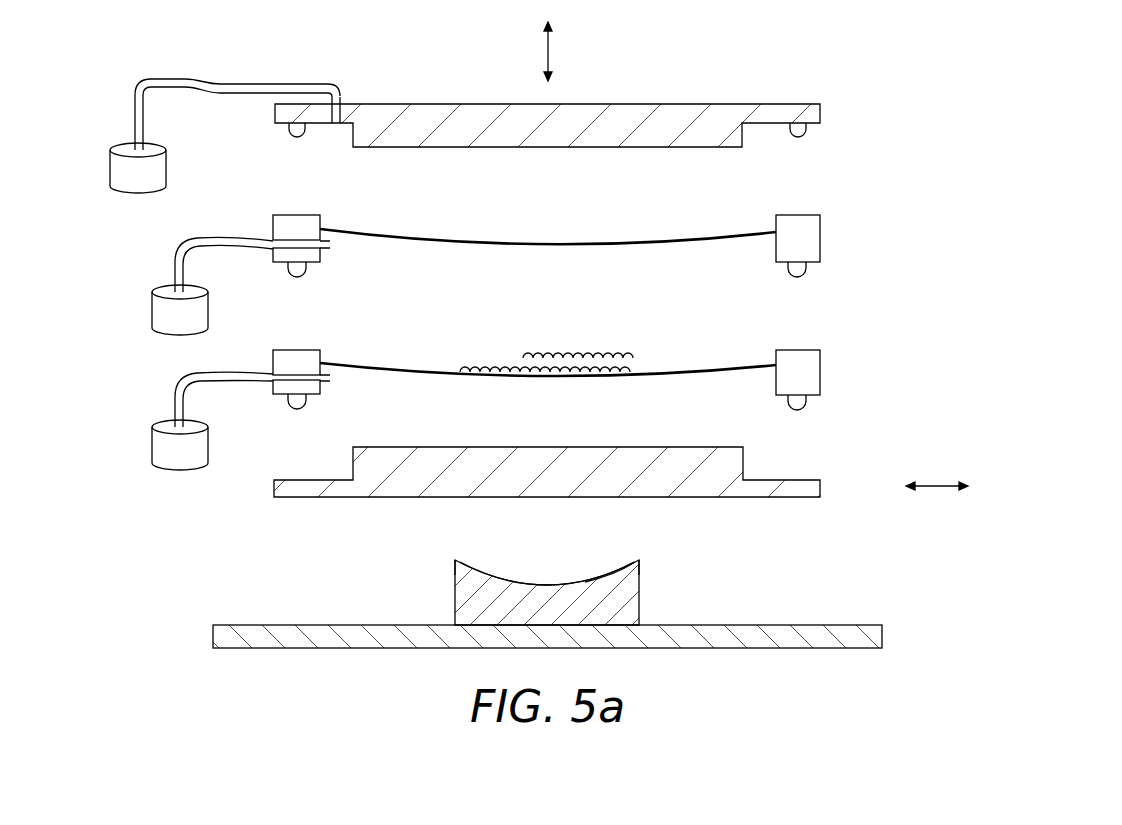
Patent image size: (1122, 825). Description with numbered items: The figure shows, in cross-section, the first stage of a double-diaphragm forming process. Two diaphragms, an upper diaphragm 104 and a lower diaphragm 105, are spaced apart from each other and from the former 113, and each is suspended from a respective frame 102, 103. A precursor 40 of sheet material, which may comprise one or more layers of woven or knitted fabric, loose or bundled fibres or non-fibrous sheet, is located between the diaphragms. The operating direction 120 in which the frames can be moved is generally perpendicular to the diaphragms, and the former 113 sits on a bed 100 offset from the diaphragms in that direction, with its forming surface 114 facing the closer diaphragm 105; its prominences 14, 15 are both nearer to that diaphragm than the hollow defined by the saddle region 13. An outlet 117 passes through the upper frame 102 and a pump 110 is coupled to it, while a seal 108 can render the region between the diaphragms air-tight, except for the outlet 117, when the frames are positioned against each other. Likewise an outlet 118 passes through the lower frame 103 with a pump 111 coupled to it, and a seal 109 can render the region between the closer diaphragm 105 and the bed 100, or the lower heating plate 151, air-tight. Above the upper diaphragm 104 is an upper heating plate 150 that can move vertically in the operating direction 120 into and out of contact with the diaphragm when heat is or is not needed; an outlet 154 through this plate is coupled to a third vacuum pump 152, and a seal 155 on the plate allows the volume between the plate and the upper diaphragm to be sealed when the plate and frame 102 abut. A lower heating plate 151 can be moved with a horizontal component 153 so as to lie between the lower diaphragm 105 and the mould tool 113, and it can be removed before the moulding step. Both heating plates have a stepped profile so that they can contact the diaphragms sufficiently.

The saddle region 13 is at (545, 580).
The prominence 14 is at (456, 561).
The prominence 15 is at (640, 561).
The precursor 40 is at (600, 350).
The bed 100 is at (855, 648).
The frame 102 is at (293, 215).
The frame 103 is at (293, 350).
The upper diaphragm 104 is at (729, 232).
The lower diaphragm 105 is at (729, 365).
The seal 108 is at (305, 276).
The seal 109 is at (305, 409).
The pump 110 is at (152, 308).
The pump 111 is at (152, 443).
The former 113 is at (640, 586).
The forming surface 114 is at (601, 578).
The outlet 117 is at (322, 246).
The outlet 118 is at (322, 379).
The operating direction 120 is at (550, 48).
The upper heating plate 150 is at (690, 104).
The lower heating plate 151 is at (693, 447).
The third vacuum pump 152 is at (137, 193).
The horizontal direction 153 is at (935, 485).
The outlet 154 is at (337, 126).
The seal 155 is at (288, 137).